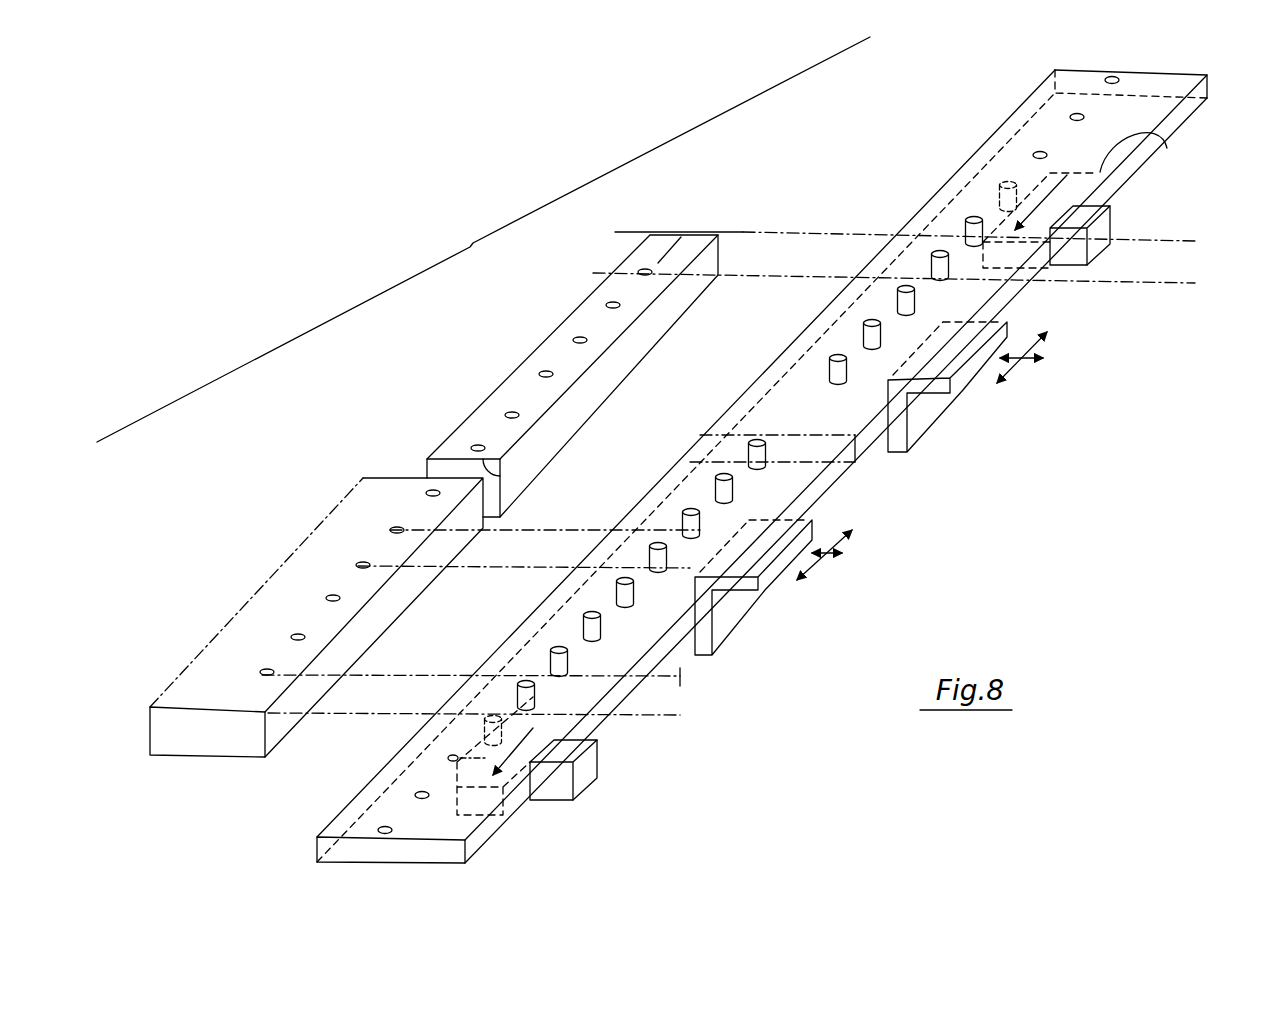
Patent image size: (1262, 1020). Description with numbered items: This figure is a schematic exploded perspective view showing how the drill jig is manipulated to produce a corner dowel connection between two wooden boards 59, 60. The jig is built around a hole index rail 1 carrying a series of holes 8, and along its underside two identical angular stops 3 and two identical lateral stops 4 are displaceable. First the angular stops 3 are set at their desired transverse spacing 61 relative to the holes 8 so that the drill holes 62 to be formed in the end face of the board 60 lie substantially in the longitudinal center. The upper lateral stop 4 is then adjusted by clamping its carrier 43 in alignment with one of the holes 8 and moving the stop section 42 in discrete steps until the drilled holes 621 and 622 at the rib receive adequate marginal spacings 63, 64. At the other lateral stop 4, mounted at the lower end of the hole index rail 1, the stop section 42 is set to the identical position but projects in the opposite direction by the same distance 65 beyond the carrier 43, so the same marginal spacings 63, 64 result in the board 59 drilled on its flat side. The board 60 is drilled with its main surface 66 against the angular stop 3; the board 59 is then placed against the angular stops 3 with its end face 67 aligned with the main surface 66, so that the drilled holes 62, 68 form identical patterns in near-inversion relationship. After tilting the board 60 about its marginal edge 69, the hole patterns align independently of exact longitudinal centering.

The hole index rail 1 is at (1200, 93).
The angular stop 3 is at (942, 424).
The lateral stop 4 is at (826, 525).
The holes 8 is at (1040, 152).
The stop section 42 is at (1155, 138).
The carrier 43 is at (1082, 268).
The wooden board 59 is at (302, 580).
The wooden board 60 is at (580, 353).
The transverse spacing 61 is at (905, 348).
The drill holes 62 is at (535, 375).
The marginal spacing 63 is at (1150, 282).
The marginal spacing 64 is at (470, 457).
The distance 65 is at (1150, 243).
The main surface 66 is at (720, 293).
The end face 67 is at (316, 617).
The drilled holes 68 is at (298, 636).
The marginal edge 69 is at (503, 490).
The drilled hole 621 is at (642, 268).
The drilled hole 622 is at (470, 452).